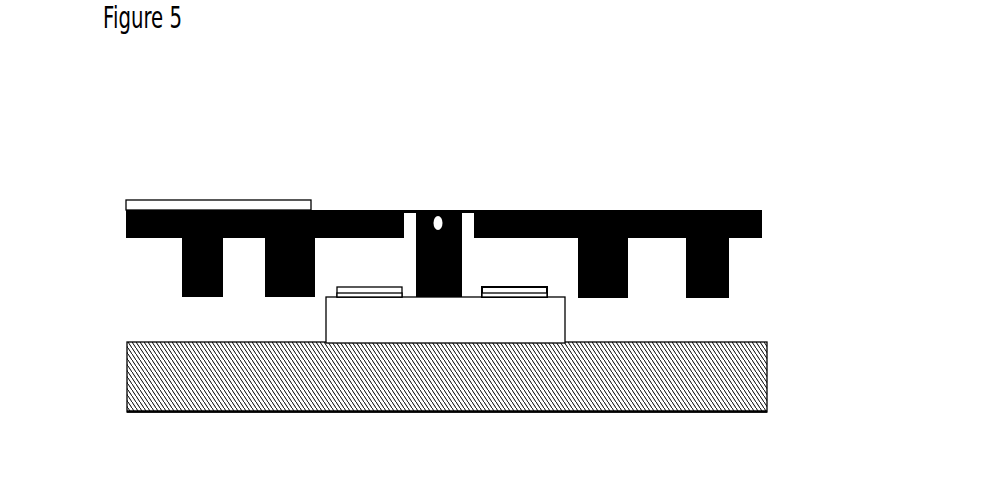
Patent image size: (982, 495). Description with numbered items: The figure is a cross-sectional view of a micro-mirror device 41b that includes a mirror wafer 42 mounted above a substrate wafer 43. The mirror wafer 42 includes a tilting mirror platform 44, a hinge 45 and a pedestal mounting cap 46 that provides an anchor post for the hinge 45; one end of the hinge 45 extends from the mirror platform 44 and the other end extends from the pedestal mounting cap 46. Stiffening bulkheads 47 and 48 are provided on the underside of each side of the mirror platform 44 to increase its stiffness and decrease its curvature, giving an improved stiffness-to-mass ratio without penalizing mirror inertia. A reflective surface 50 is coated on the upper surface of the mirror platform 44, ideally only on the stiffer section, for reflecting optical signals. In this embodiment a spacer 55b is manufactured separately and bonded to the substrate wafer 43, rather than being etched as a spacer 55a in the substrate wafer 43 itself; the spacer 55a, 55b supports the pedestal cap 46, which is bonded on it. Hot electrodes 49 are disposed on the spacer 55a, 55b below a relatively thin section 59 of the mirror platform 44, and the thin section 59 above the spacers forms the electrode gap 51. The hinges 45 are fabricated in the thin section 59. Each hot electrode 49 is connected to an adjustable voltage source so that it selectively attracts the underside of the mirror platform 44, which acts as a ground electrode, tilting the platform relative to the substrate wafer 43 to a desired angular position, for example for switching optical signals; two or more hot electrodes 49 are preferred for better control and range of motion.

The micro-mirror device 41b is at (501, 107).
The mirror wafer 42 is at (126, 238).
The substrate wafer 43 is at (127, 353).
The tilting mirror platform 44 is at (763, 211).
The hinge 45 is at (438, 210).
The pedestal mounting cap 46 is at (462, 210).
The stiffening bulkhead 47 is at (265, 271).
The stiffening bulkhead 48 is at (182, 282).
The hot electrode 49 is at (348, 288).
The reflective surface 50 is at (205, 198).
The electrode gap 51 is at (442, 276).
The spacer 55a is at (567, 323).
The spacer 55b is at (498, 334).
The thin section 59 is at (360, 210).